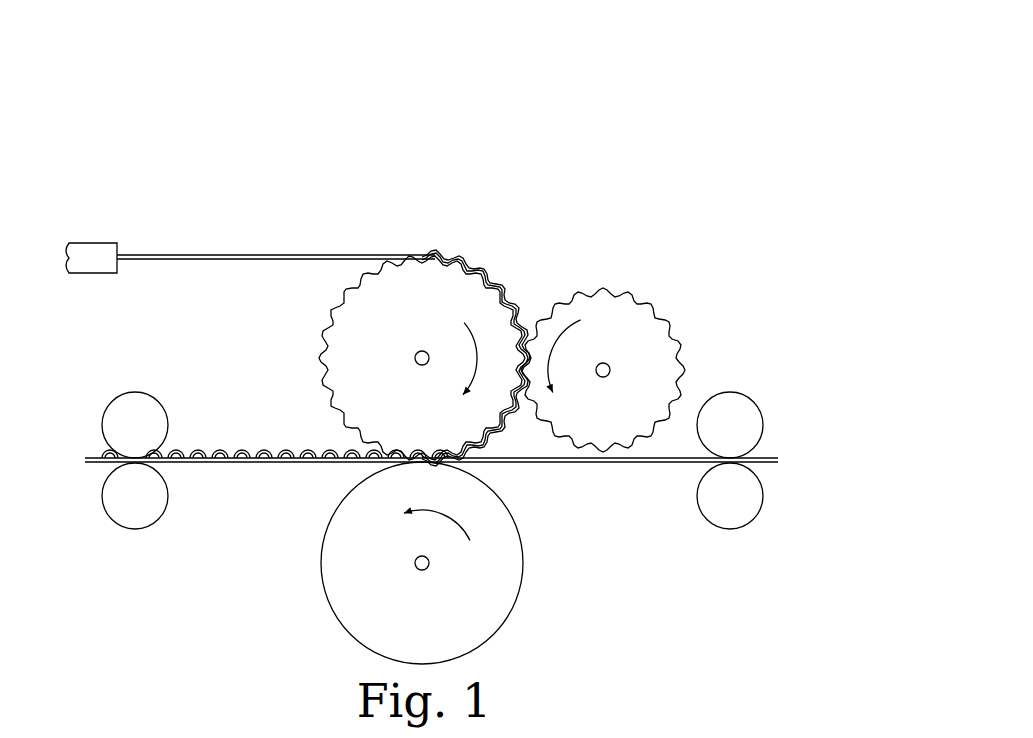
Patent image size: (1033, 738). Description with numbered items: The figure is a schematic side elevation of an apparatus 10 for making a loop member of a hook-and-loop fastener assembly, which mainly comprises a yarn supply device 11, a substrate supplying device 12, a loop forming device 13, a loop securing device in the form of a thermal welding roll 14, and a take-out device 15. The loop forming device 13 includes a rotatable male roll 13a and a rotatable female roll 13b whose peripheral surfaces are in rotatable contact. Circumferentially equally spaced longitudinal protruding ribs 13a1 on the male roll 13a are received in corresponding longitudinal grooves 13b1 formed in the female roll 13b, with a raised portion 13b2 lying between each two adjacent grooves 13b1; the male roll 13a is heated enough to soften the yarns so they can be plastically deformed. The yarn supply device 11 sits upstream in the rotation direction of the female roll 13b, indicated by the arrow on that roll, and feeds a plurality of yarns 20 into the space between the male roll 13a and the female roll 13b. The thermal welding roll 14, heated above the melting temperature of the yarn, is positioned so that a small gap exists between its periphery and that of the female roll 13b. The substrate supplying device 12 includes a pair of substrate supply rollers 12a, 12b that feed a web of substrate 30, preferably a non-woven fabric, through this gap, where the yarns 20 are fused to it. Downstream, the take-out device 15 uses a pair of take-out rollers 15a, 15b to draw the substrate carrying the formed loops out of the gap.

The apparatus 10 is at (667, 98).
The yarn supply device 11 is at (105, 247).
The yarns 20 is at (256, 256).
The loop forming device 13 is at (445, 170).
The male roll 13a is at (631, 334).
The protruding ribs 13a1 is at (630, 290).
The female roll 13b is at (445, 322).
The grooves 13b1 is at (488, 277).
The raised portion 13b2 is at (456, 262).
The thermal welding roll 14 is at (510, 602).
The take-out device 15 is at (72, 353).
The take-out roller 15a is at (122, 522).
The take-out roller 15b is at (121, 410).
The substrate supplying device 12 is at (782, 342).
The substrate supply roller 12a is at (735, 522).
The substrate supply roller 12b is at (740, 405).
The substrate 30 is at (578, 463).